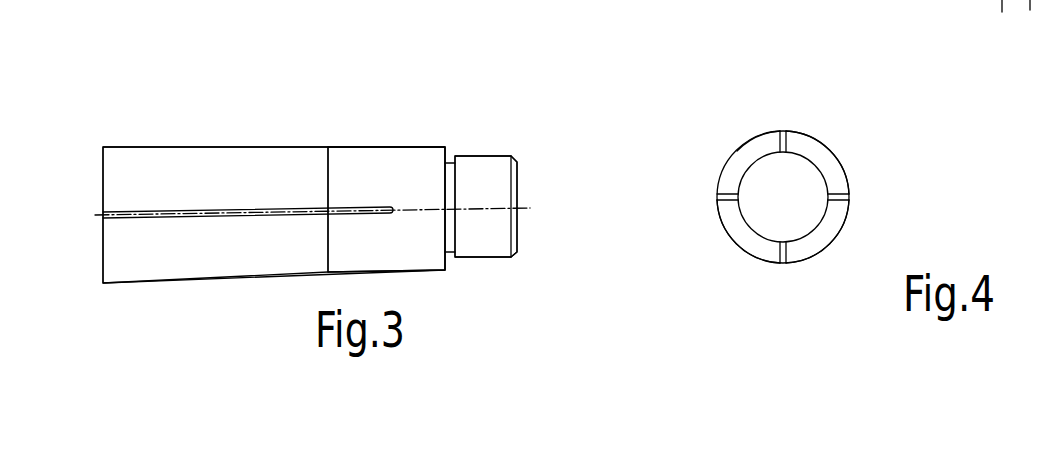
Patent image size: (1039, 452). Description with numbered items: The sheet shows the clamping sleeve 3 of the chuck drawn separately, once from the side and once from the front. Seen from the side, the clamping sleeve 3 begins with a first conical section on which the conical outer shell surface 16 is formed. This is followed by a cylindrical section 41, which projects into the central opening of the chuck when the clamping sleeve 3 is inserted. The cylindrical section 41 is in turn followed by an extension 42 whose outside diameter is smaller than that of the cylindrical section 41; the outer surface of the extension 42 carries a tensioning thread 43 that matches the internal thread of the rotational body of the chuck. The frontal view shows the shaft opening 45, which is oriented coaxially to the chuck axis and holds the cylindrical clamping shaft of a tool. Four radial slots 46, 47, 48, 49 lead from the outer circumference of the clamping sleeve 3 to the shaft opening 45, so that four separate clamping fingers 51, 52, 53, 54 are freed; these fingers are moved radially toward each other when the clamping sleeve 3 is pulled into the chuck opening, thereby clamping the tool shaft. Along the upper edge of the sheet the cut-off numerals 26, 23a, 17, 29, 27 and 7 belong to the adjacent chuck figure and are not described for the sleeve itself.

In FIG. 3, the clamping sleeve 3 is at (96, 119).
In FIG. 3, the conical outer shell surface 16 is at (192, 160).
In FIG. 3, the cylindrical section 41 is at (398, 160).
In FIG. 3, the extension 42 is at (545, 134).
In FIG. 3, the tensioning thread 43 is at (487, 228).
In FIG. 3, the radial slot 48 is at (157, 219).
In FIG. 4, the radial slot 48 is at (862, 204).
In FIG. 3, the element 26 is at (137, 0).
In FIG. 3, the element 23a is at (226, 0).
In FIG. 3, the element 17 is at (272, 2).
In FIG. 3, the element 29 is at (277, 0).
In FIG. 3, the element 27 is at (318, 0).
In FIG. 3, the element 7 is at (366, 0).
In FIG. 4, the shaft opening 45 is at (765, 216).
In FIG. 4, the radial slot 46 is at (705, 205).
In FIG. 4, the radial slot 47 is at (790, 117).
In FIG. 4, the radial slot 49 is at (783, 276).
In FIG. 4, the clamping finger 51 is at (757, 153).
In FIG. 4, the clamping finger 52 is at (820, 158).
In FIG. 4, the clamping finger 53 is at (808, 222).
In FIG. 4, the clamping finger 54 is at (735, 218).